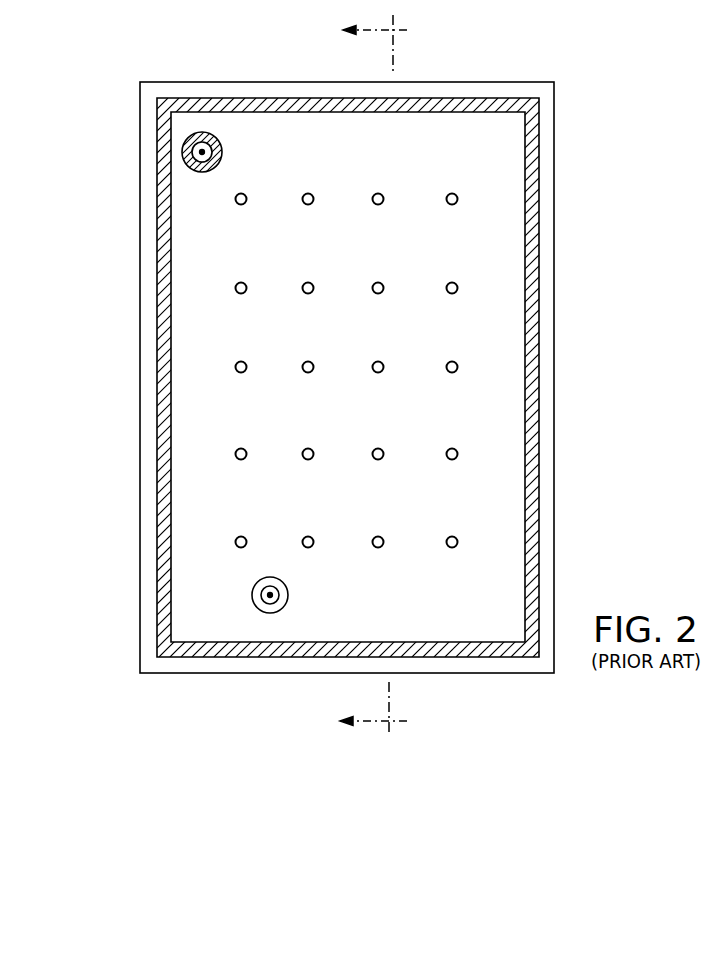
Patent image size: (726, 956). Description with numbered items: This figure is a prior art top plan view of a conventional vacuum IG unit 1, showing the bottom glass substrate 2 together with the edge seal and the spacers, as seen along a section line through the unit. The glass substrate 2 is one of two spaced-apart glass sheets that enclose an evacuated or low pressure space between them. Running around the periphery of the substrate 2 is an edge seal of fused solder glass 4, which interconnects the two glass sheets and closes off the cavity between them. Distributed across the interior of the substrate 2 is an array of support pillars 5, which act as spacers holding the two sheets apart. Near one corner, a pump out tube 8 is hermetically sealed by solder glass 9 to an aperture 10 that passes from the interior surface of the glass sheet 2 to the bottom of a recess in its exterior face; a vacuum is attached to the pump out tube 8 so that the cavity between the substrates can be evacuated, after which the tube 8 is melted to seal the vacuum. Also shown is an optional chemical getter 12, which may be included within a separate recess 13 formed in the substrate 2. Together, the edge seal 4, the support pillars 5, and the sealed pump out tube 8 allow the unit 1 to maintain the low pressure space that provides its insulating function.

The vacuum IG unit 1 is at (130, 566).
The glass substrate 2 is at (343, 90).
The edge seal of fused solder glass 4 is at (263, 107).
The support pillars 5 is at (459, 288).
The pump out tube 8 is at (187, 145).
The solder glass 9 is at (203, 172).
The aperture 10 is at (201, 152).
The chemical getter 12 is at (268, 597).
The recess 13 is at (283, 594).